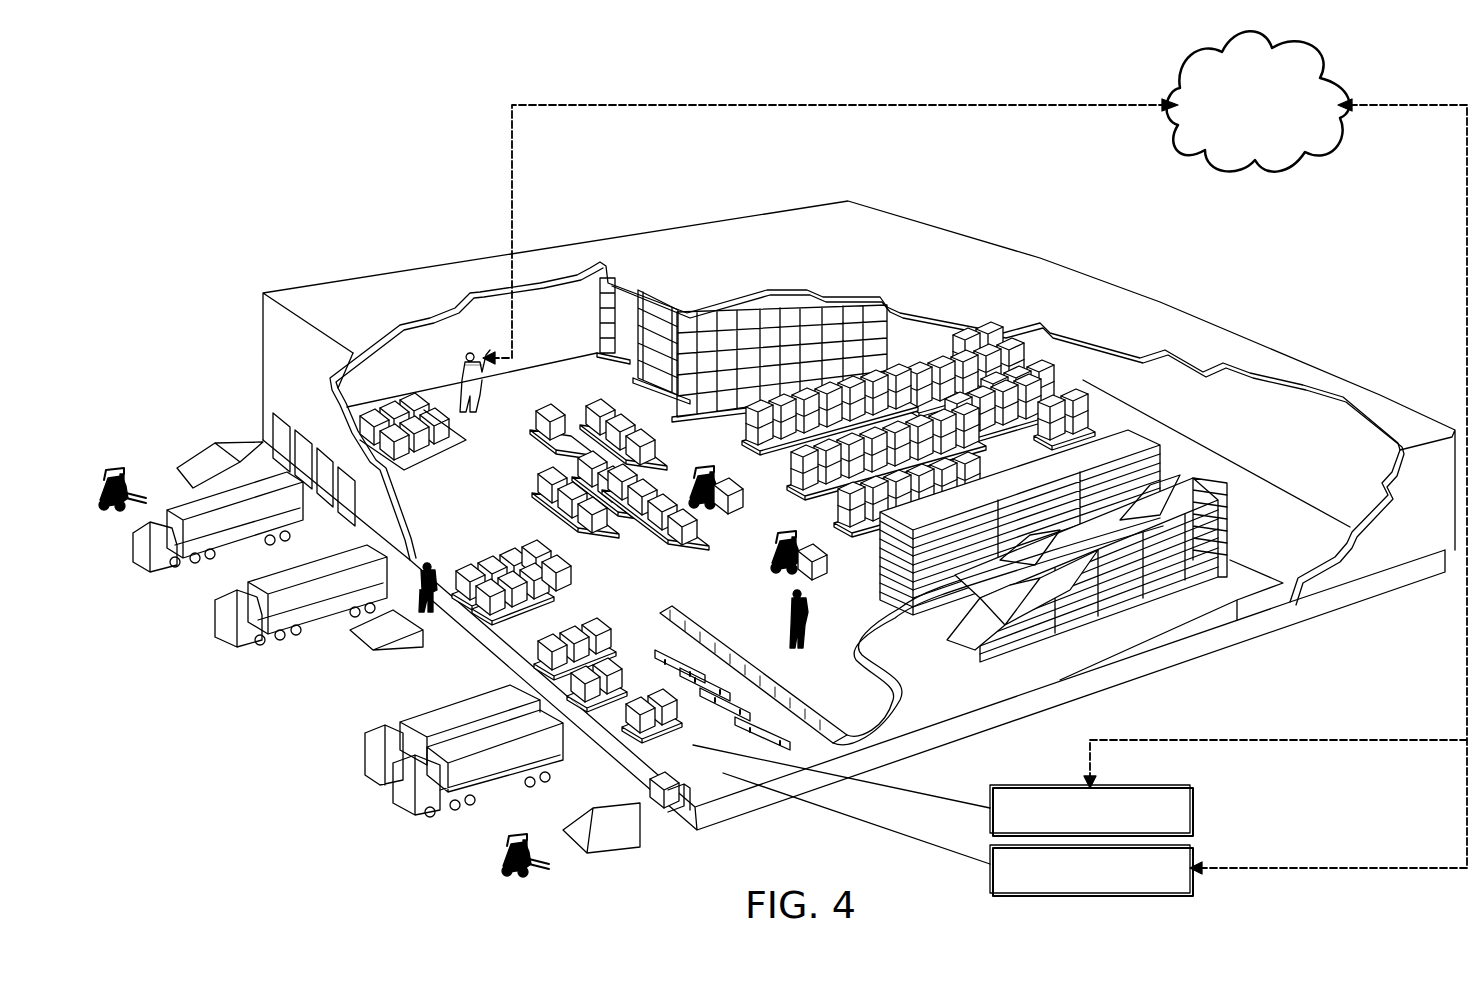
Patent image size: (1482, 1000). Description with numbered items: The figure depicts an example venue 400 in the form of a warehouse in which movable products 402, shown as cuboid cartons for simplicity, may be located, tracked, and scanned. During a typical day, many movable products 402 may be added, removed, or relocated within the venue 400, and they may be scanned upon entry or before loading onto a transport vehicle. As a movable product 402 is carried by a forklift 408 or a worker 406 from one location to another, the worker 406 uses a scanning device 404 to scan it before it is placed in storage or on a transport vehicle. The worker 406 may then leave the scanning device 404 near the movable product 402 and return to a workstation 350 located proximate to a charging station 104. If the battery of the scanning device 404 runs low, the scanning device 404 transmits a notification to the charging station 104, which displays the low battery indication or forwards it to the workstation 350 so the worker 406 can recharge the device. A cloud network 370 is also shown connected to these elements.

The cloud network 370 is at (1178, 88).
The venue 400 is at (1068, 244).
The movable products 402 is at (548, 445).
The scanning device 404 is at (480, 358).
The worker 406 is at (482, 392).
The forklift 408 is at (773, 550).
The workstation 350 is at (1193, 806).
The charging station 104 is at (1193, 880).